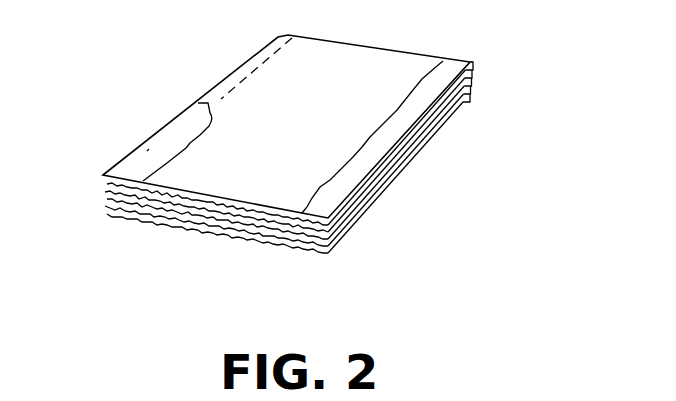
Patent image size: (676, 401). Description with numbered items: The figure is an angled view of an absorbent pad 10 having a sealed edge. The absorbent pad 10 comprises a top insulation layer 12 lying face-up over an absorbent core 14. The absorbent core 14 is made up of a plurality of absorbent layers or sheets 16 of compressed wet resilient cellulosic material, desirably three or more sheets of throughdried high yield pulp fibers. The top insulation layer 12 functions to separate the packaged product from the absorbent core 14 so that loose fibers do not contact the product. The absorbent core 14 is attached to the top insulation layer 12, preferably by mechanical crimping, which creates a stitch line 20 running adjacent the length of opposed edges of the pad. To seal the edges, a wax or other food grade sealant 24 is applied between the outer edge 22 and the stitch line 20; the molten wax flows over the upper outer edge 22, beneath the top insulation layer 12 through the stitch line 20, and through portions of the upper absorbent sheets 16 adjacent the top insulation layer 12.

The absorbent pad 10 is at (316, 151).
The top insulation layer 12 is at (358, 60).
The absorbent core 14 is at (93, 180).
The absorbent sheets 16 is at (355, 198).
The stitch line 20 is at (261, 63).
The outer edge 22 is at (213, 90).
The sealant 24 is at (147, 151).